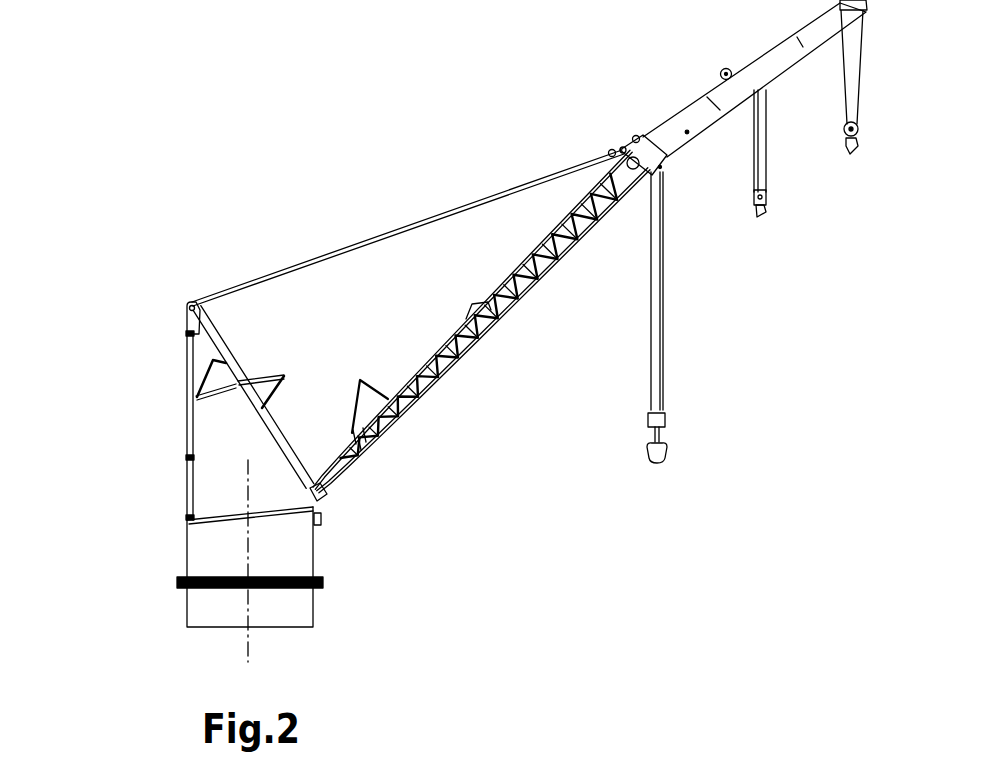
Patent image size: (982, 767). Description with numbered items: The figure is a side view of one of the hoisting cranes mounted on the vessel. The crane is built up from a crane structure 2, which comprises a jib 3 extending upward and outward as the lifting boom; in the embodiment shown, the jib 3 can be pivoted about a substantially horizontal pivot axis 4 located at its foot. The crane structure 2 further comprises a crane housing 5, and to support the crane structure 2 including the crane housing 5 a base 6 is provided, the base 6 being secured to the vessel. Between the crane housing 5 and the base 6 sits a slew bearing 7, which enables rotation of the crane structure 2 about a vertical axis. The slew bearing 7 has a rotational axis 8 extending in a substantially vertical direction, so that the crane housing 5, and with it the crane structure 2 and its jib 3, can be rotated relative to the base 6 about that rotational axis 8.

The crane structure 2 is at (161, 471).
The jib 3 is at (717, 216).
The pivot axis 4 is at (342, 507).
The crane housing 5 is at (343, 554).
The base 6 is at (344, 625).
The slew bearing 7 is at (356, 584).
The rotational axis 8 is at (216, 650).